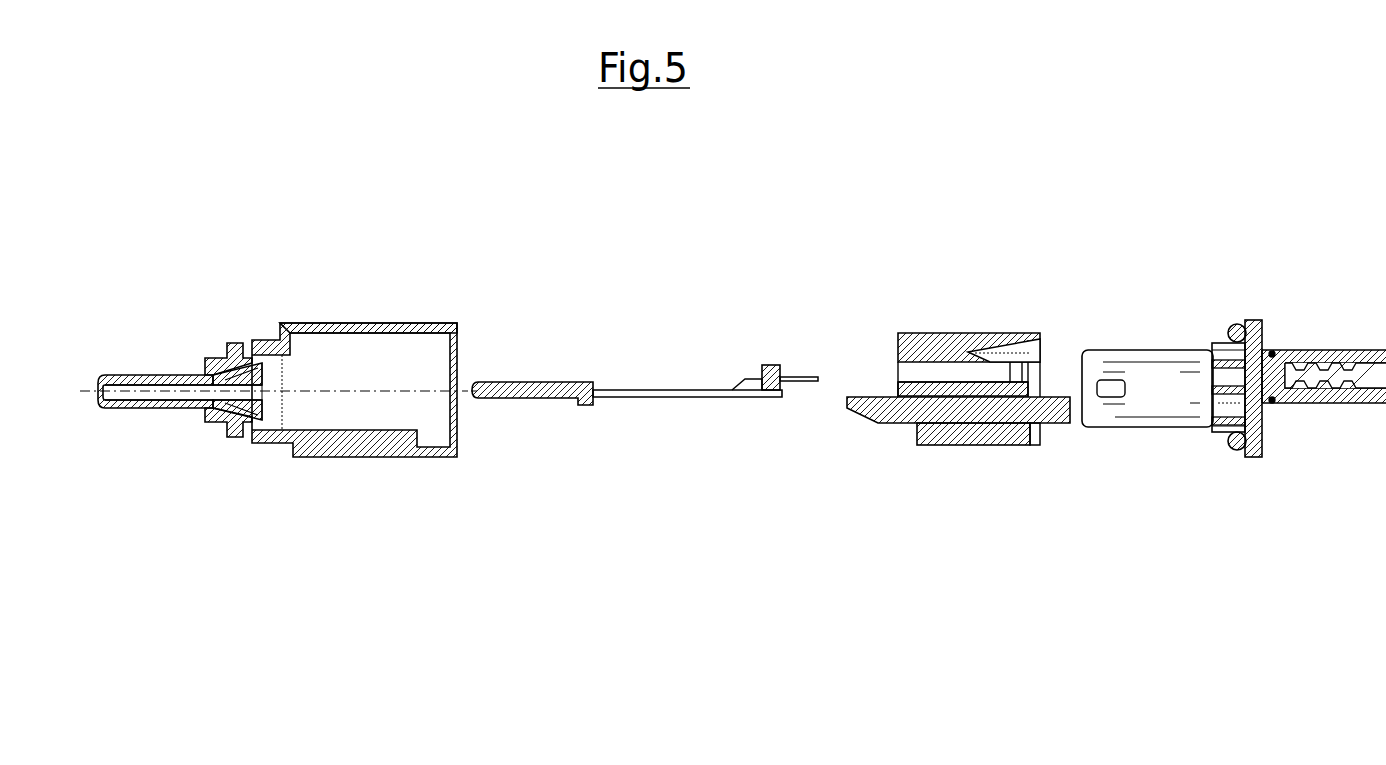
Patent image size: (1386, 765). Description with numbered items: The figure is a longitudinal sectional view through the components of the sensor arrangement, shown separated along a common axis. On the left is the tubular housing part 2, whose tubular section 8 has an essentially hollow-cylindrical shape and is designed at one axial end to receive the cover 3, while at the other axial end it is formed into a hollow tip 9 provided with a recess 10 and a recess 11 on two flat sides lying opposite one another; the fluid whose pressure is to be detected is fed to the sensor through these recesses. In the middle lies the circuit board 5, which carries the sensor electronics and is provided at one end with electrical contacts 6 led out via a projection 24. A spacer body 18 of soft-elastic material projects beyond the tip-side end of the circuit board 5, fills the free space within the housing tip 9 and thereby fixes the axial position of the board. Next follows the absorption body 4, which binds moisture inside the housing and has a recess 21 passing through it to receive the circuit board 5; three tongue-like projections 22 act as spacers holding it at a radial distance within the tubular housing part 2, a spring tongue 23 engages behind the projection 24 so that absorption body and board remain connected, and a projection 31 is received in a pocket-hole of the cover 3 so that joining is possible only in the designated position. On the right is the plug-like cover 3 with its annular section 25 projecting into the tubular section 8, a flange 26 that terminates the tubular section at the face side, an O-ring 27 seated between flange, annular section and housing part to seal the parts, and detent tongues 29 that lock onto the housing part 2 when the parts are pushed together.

The tubular housing part 2 is at (340, 320).
The cover 3 is at (1242, 323).
The absorption body 4 is at (950, 331).
The circuit board 5 is at (661, 398).
The electrical contacts 6 is at (813, 377).
The tubular section 8 is at (412, 322).
The tip 9 is at (195, 412).
The recess 10 is at (143, 412).
The recess 11 is at (152, 372).
The spacer body 18 is at (553, 381).
The recess 21 is at (882, 376).
The projections 22 is at (1028, 332).
The spring tongue 23 is at (975, 365).
The projection 24 is at (774, 365).
The annular section 25 is at (1218, 432).
The flange 26 is at (1257, 322).
The O-ring 27 is at (1235, 451).
The detent tongues 29 is at (1178, 408).
The projection 31 is at (1058, 445).